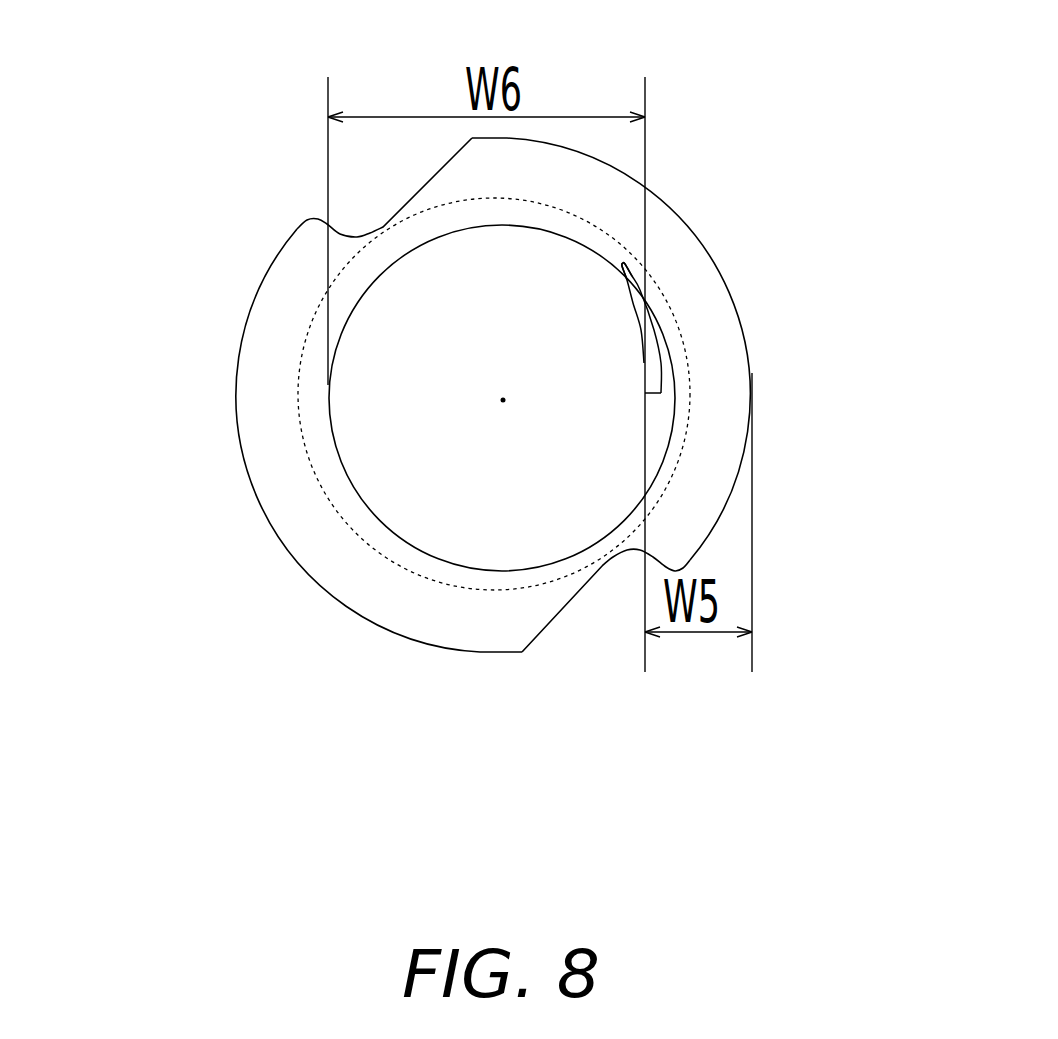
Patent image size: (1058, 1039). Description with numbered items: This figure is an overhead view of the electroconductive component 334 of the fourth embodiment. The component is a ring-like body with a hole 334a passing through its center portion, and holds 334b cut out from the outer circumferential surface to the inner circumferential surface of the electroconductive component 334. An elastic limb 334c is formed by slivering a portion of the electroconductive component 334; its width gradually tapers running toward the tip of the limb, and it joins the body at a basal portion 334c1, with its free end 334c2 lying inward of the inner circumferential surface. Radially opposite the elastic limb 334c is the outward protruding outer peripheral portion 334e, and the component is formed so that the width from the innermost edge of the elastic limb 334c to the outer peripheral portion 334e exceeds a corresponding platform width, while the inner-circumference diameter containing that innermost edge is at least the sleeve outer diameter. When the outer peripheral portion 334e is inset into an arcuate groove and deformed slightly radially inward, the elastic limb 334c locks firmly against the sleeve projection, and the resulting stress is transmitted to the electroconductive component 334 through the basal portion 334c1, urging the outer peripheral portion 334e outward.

The electroconductive component 334 is at (257, 237).
The hole 334a is at (377, 435).
The holds 334b is at (318, 219).
The elastic limb 334c is at (657, 357).
The basal portion of the elastic limb 334c1 is at (615, 275).
The open end of slit 334c2 is at (660, 392).
The outer peripheral portion 334e is at (688, 285).